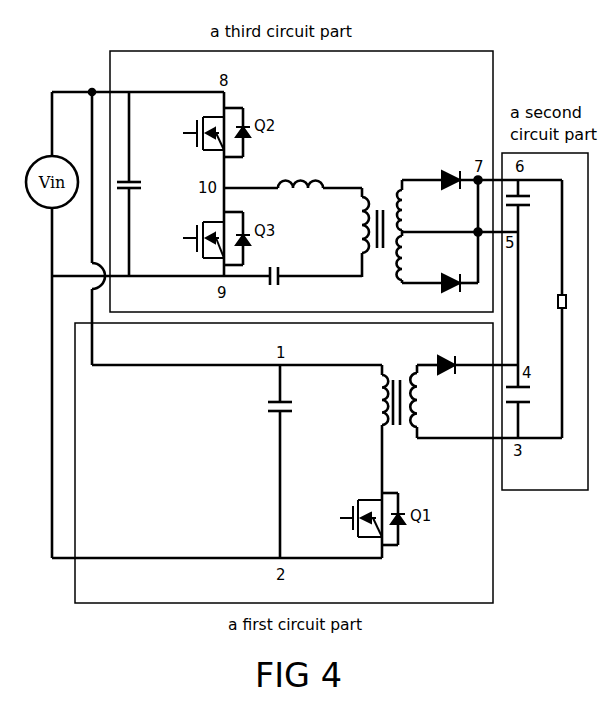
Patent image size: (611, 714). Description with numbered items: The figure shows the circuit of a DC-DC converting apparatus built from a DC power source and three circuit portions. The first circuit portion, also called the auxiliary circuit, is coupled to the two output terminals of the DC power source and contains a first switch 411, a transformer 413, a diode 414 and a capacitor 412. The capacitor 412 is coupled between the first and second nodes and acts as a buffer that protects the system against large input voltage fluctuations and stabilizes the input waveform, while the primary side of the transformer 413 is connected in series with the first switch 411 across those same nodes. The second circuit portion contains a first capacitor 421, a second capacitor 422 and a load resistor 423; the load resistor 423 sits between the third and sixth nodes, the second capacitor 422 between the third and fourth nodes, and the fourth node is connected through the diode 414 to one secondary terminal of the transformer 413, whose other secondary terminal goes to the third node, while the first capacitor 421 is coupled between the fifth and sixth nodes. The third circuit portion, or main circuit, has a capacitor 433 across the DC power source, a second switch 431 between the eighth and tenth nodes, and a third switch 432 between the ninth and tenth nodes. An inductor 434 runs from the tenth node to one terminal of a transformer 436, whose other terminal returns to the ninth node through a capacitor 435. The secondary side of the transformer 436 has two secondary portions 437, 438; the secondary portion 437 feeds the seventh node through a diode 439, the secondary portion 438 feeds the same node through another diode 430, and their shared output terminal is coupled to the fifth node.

The switch Q1 411 is at (406, 523).
The capacitor 412 is at (291, 461).
The transformer 413 is at (382, 461).
The diode 414 is at (442, 375).
The capacitor C1 421 is at (534, 206).
The capacitor C2 422 is at (534, 408).
The load resistor 423 is at (546, 300).
The diode 430 is at (452, 292).
The switch Q2 431 is at (249, 133).
The switch Q3 432 is at (249, 239).
The capacitor 433 is at (144, 184).
The inductor 434 is at (323, 174).
The capacitor 435 is at (272, 288).
The transformer 436 is at (356, 225).
The secondary portion 437 is at (415, 210).
The secondary portion 438 is at (415, 258).
The diode 439 is at (452, 171).